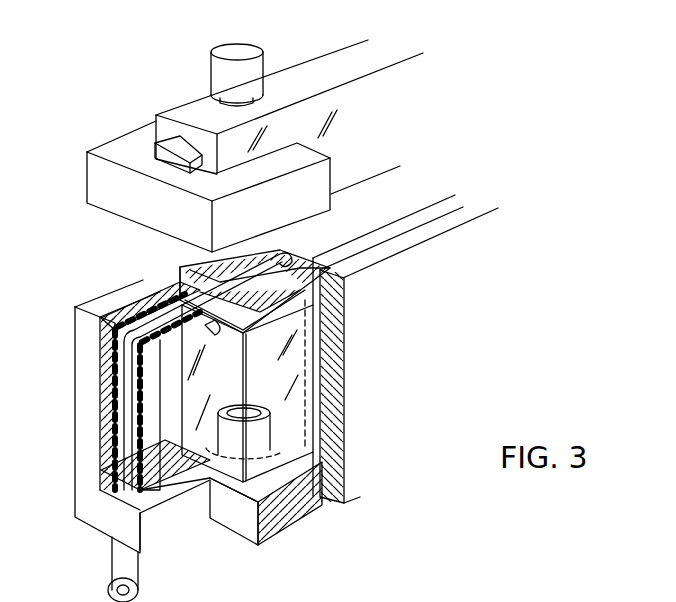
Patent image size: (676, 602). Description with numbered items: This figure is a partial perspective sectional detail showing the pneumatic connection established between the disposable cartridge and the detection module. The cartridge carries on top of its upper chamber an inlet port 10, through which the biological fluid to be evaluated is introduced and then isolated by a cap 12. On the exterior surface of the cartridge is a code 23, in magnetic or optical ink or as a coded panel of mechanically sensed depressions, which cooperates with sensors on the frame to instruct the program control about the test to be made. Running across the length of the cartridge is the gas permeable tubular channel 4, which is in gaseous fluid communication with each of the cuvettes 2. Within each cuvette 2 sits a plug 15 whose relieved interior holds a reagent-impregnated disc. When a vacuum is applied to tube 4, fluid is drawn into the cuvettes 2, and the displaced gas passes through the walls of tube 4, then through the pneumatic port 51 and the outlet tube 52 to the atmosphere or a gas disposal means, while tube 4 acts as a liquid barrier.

The inlet port 10 is at (213, 100).
The cap 12 is at (266, 50).
The code 23 is at (152, 156).
The tubular channel 4 is at (291, 252).
The pneumatic port 51 is at (206, 337).
The cuvettes 2 is at (291, 362).
The plug 15 is at (254, 438).
The outlet tube 52 is at (110, 578).